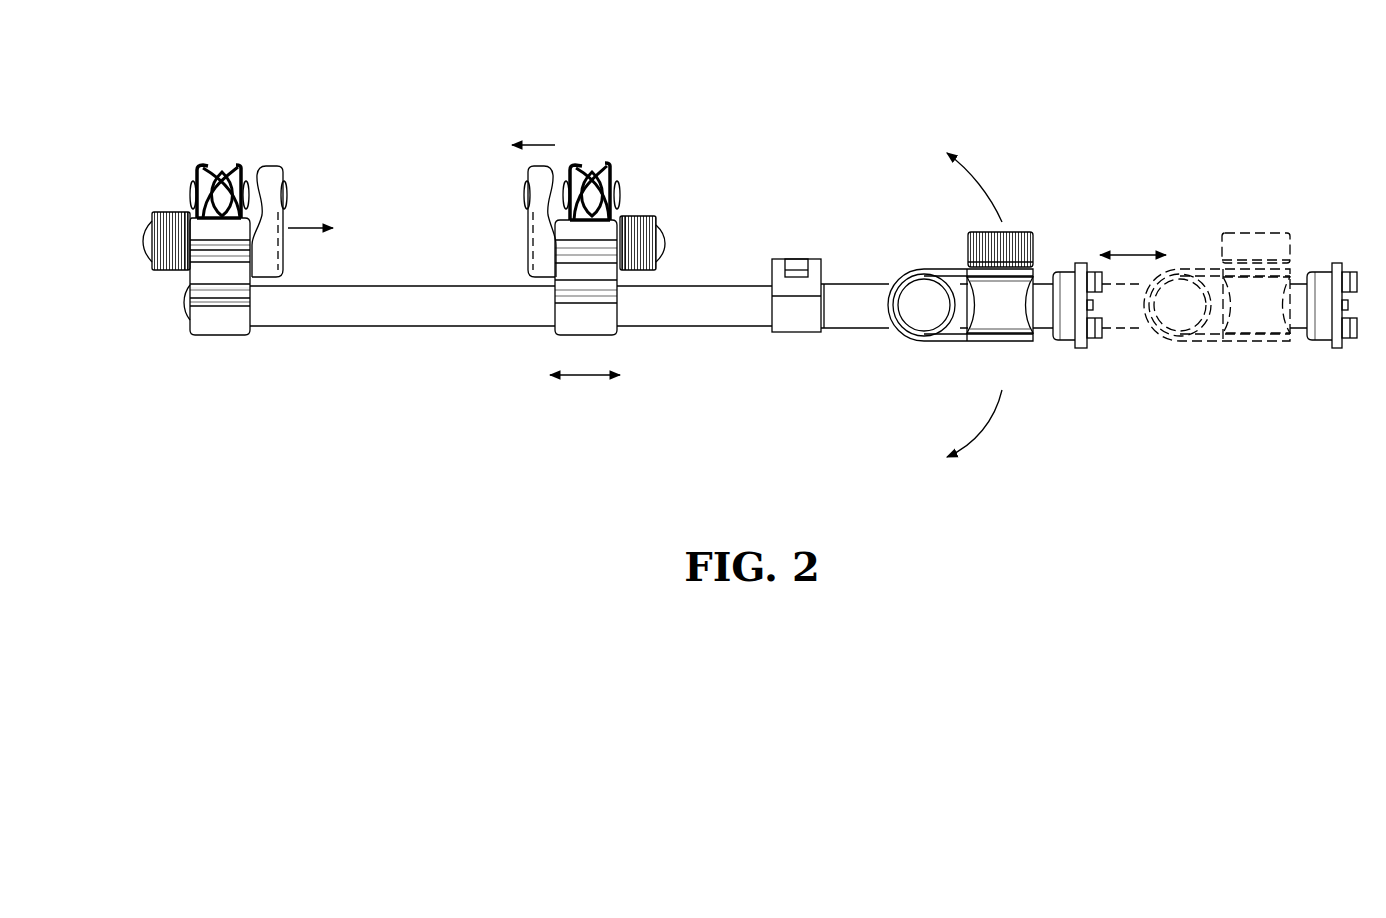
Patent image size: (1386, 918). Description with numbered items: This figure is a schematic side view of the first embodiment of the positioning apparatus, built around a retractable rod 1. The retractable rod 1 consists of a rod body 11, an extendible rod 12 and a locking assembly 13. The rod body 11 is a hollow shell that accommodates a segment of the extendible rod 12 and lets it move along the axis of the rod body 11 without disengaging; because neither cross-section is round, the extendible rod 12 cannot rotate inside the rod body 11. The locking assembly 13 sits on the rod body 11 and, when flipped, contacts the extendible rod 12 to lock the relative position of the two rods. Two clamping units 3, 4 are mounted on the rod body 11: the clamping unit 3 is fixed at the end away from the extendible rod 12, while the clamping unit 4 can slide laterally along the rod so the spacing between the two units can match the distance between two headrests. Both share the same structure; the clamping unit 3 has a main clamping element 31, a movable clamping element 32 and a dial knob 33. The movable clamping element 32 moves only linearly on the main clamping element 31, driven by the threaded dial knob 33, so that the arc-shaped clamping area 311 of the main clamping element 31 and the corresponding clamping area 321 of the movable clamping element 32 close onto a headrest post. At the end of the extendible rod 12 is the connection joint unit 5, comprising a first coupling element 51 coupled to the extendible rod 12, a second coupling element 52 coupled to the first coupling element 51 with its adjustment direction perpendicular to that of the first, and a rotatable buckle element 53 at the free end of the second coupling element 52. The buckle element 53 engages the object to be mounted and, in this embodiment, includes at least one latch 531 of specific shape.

The retractable rod 1 is at (878, 163).
The rod body 11 is at (745, 285).
The extendible rod 12 is at (848, 290).
The locking assembly 13 is at (803, 262).
The clamping unit 3 is at (265, 52).
The main clamping element 31 is at (200, 168).
The movable clamping element 32 is at (225, 172).
The clamping area 321 is at (240, 178).
The dial knob 33 is at (160, 212).
The clamping area 311 is at (234, 218).
The clamping unit 4 is at (577, 148).
The connection joint unit 5 is at (1023, 152).
The first coupling element 51 is at (957, 287).
The second coupling element 52 is at (1045, 290).
The buckle element 53 is at (1086, 268).
The latch 531 is at (1096, 338).